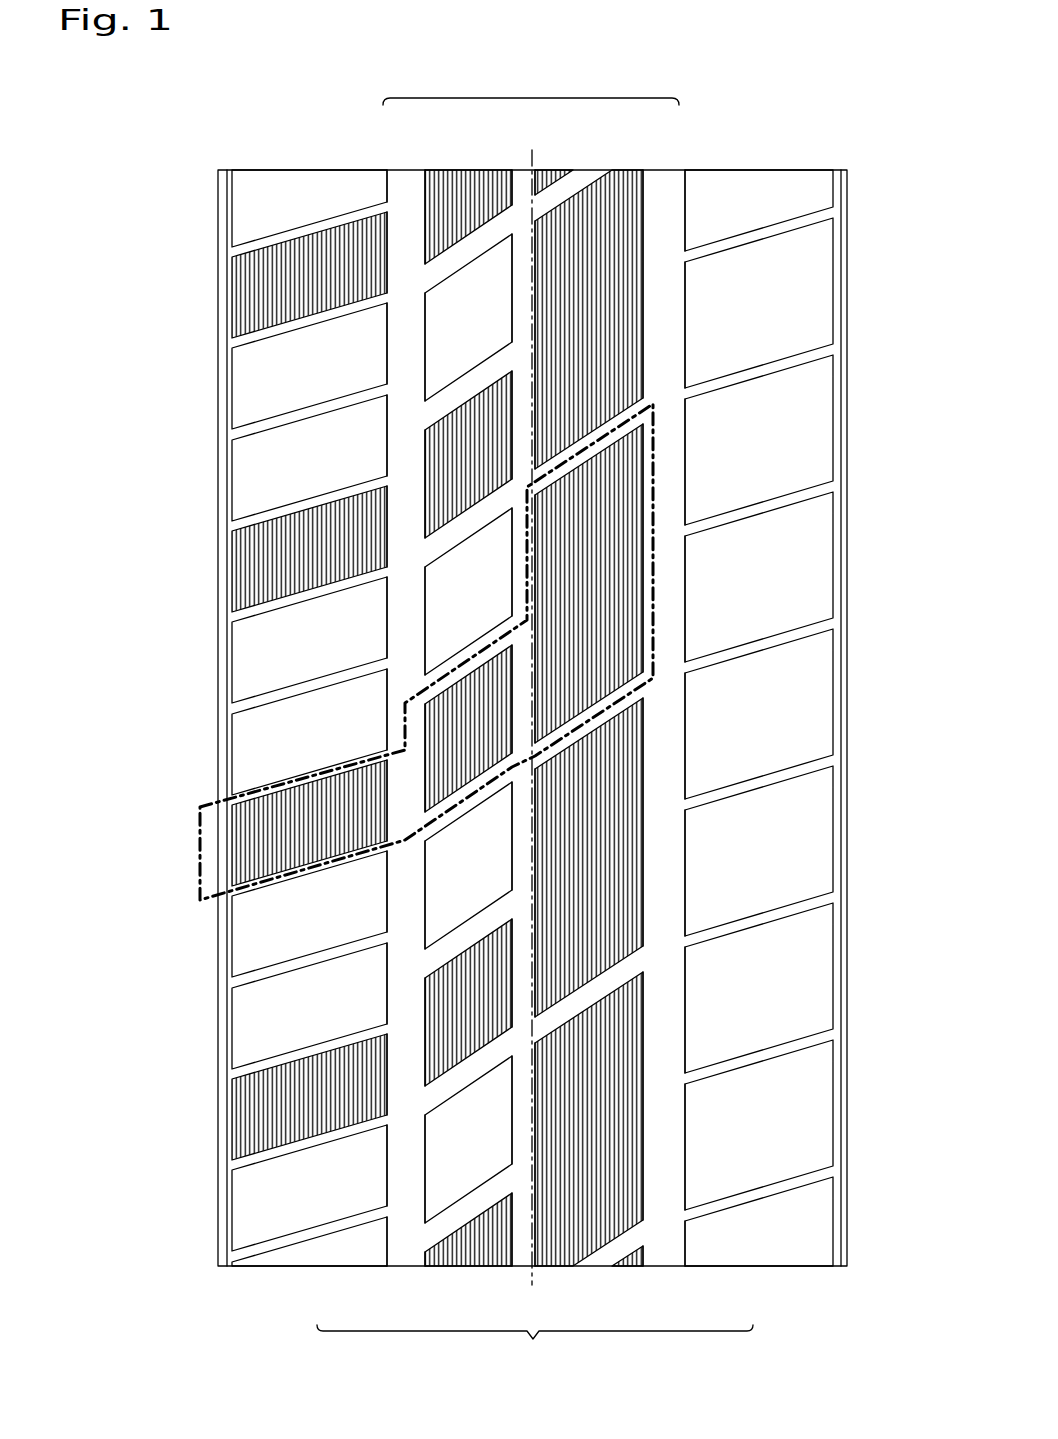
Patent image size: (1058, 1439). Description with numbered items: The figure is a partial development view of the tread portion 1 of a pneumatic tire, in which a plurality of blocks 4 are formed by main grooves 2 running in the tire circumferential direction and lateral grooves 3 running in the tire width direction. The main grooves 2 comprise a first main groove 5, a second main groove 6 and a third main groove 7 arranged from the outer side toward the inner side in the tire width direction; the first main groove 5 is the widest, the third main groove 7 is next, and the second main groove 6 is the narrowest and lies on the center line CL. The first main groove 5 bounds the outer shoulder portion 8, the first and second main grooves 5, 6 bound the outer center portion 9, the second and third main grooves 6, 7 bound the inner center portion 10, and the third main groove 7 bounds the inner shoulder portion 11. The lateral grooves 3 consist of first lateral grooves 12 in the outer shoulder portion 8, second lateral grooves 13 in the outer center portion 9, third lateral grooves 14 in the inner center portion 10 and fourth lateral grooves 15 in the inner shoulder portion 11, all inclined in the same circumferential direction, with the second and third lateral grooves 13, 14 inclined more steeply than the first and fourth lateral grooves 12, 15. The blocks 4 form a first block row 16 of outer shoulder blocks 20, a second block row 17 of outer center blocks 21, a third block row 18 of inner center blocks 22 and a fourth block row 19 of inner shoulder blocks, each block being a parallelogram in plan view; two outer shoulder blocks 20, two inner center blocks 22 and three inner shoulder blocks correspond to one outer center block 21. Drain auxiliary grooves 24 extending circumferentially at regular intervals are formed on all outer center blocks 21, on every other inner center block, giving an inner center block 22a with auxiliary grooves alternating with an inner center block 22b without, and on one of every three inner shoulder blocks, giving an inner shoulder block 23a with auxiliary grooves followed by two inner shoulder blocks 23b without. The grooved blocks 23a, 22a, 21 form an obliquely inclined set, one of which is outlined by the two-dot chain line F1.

The tread portion 1 is at (250, 172).
The main grooves 2 is at (531, 83).
The lateral grooves 3 is at (535, 1349).
The blocks 4 is at (792, 432).
The first main groove 5 is at (665, 180).
The second main groove 6 is at (517, 182).
The third main groove 7 is at (407, 172).
The outer shoulder portion 8 is at (793, 700).
The outer center portion 9 is at (718, 700).
The inner center portion 10 is at (294, 700).
The inner shoulder portion 11 is at (221, 700).
The first lateral grooves 12 is at (738, 1212).
The second lateral grooves 13 is at (570, 1010).
The third lateral grooves 14 is at (465, 1075).
The fourth lateral grooves 15 is at (326, 1228).
The first block row 16 is at (793, 700).
The second block row 17 is at (718, 700).
The third block row 18 is at (294, 700).
The fourth block row 19 is at (221, 700).
The outer shoulder blocks 20 is at (797, 554).
The outer center blocks 21 is at (612, 645).
The inner center blocks 22 is at (294, 660).
The inner center block with auxiliary grooves 22a is at (440, 703).
The inner center block without auxiliary grooves 22b is at (428, 577).
The inner shoulder block with auxiliary grooves 23a is at (230, 868).
The inner shoulder blocks without auxiliary grooves 23b is at (245, 638).
The drain auxiliary grooves 24 is at (623, 818).
The center line CL is at (532, 162).
The two-dot chain line F1 is at (198, 835).